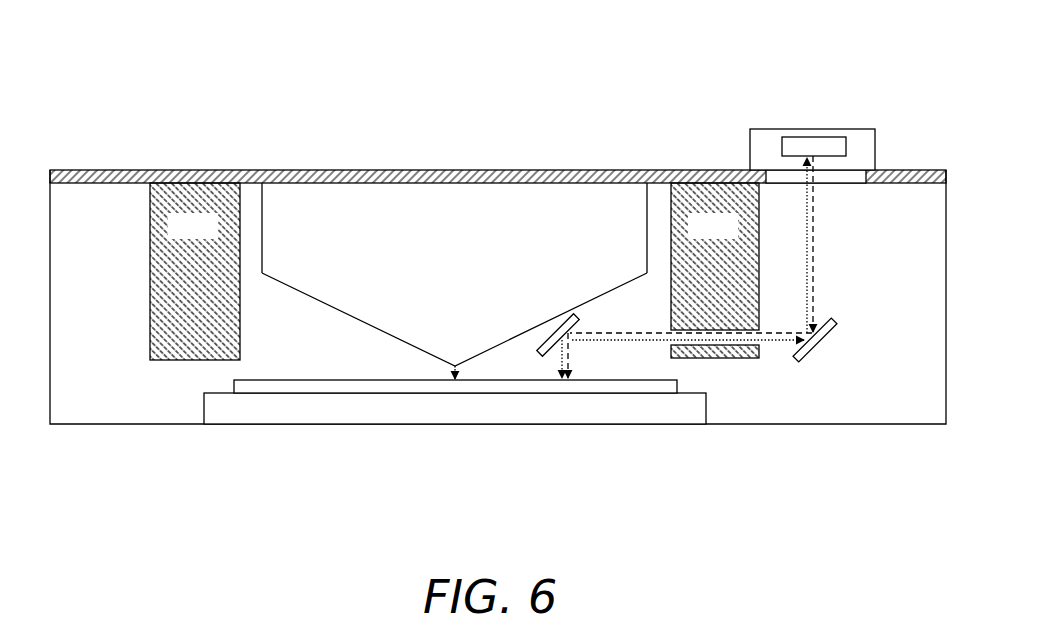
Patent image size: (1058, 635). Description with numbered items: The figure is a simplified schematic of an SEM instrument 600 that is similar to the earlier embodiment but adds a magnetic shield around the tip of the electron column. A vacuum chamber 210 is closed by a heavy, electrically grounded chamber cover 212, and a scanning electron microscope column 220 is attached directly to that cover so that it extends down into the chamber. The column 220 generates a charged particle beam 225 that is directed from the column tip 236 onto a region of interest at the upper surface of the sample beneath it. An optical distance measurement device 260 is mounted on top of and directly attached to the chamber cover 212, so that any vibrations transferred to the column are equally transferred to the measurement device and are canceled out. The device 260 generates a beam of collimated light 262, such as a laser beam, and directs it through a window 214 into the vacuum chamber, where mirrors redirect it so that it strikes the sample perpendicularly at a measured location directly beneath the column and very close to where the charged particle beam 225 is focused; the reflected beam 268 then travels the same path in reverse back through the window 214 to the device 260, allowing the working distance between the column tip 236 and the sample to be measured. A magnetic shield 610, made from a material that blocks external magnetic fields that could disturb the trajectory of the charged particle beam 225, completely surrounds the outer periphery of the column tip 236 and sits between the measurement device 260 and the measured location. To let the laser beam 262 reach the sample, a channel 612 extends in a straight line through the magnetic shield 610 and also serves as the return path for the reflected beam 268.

The SEM instrument 600 is at (229, 82).
The vacuum chamber 210 is at (110, 414).
The chamber cover 212 is at (78, 171).
The window 214 is at (836, 183).
The scanning electron microscope column 220 is at (454, 234).
The charged particle beam 225 is at (452, 374).
The column tip 236 is at (475, 331).
The optical distance measurement device 260 is at (862, 128).
The beam of collimated light 262 is at (812, 290).
The reflected beam 268 is at (768, 340).
The magnetic shield 610 is at (213, 237).
The channel 612 is at (717, 330).